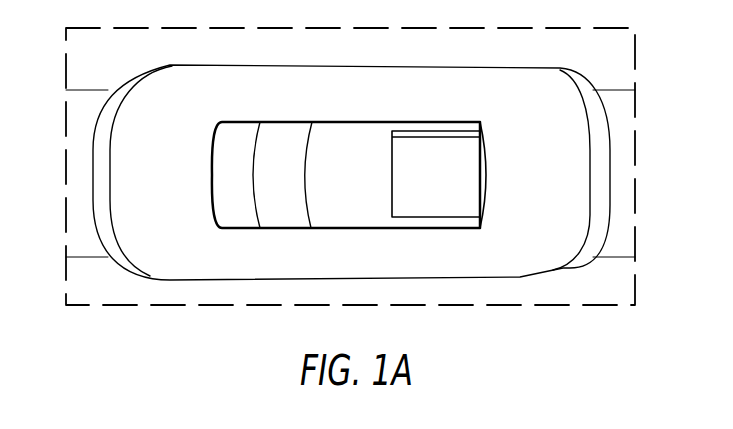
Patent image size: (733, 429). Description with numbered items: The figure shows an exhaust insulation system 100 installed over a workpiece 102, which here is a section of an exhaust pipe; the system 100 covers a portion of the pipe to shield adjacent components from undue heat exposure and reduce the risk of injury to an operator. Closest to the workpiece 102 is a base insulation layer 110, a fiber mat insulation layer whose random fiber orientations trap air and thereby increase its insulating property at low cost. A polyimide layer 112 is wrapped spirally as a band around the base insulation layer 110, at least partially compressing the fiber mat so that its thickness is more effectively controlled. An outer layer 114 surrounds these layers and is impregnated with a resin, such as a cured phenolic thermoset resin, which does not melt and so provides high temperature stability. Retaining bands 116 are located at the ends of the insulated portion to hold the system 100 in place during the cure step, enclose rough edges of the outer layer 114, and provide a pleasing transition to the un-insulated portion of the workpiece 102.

The exhaust insulation system 100 is at (315, 236).
The workpiece 102 is at (615, 90).
The base insulation layer 110 is at (362, 142).
The polyimide layer 112 is at (282, 142).
The outer layer 114 is at (170, 75).
The retaining bands 116 is at (95, 149).